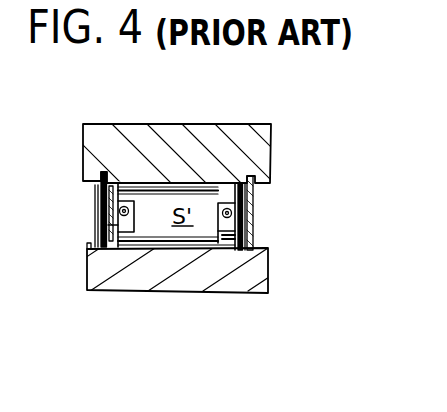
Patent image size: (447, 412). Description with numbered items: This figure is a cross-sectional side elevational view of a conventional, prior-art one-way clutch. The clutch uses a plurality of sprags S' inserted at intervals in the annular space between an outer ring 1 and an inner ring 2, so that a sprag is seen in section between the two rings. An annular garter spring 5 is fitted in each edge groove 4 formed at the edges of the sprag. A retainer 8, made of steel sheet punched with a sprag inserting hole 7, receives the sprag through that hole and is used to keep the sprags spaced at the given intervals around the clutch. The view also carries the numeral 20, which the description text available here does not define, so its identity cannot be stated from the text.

The outer ring 1 is at (163, 135).
The inner ring 2 is at (128, 282).
The edge groove 4 is at (95, 226).
The annular garter spring 5 is at (255, 223).
The sprag inserting hole 7 is at (233, 191).
The retainer 8 is at (255, 212).
The bolt 20 is at (98, 195).